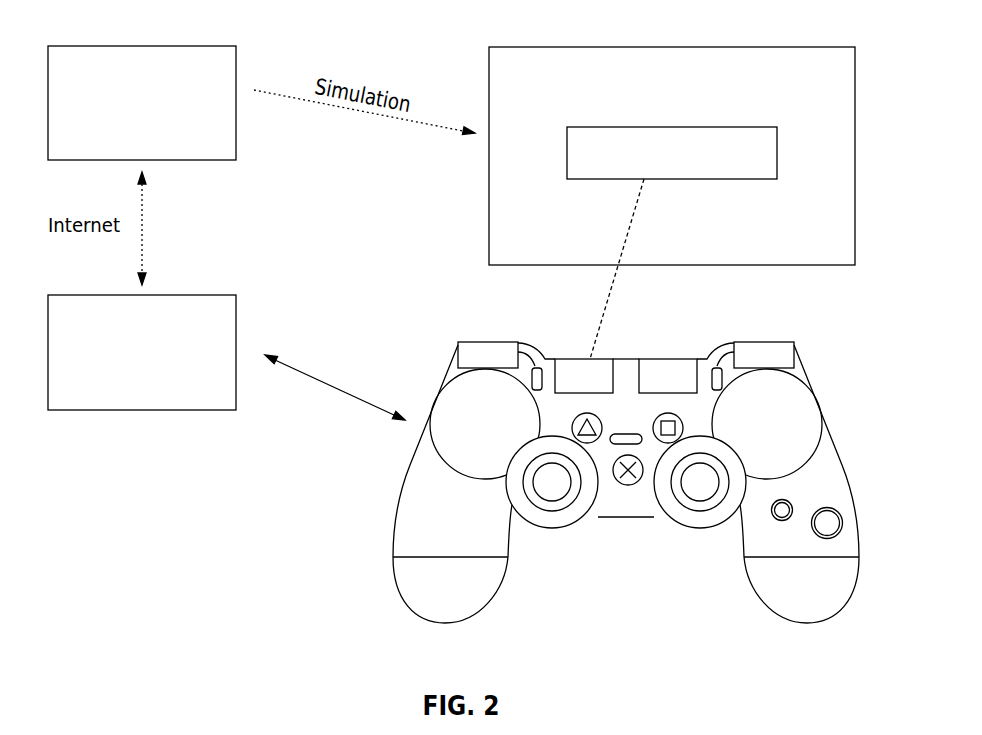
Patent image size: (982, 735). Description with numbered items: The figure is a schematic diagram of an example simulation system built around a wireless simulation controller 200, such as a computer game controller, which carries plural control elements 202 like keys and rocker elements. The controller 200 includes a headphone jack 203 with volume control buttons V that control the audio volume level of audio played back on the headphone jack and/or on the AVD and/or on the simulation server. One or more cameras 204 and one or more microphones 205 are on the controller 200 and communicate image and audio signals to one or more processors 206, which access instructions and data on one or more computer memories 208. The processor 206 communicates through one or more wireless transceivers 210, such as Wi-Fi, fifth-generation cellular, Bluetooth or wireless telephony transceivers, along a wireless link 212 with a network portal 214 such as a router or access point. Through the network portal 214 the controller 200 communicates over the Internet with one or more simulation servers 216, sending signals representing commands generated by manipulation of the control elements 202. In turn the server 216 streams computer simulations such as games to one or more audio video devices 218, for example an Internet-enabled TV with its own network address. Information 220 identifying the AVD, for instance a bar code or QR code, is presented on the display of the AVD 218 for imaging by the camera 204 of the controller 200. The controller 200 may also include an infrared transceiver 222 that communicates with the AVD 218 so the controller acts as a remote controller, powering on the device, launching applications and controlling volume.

The wireless simulation controller 200 is at (633, 458).
The control elements 202 is at (617, 484).
The headphone jack 203 is at (843, 523).
The camera 204 is at (560, 358).
The microphone 205 is at (688, 360).
The processor 206 is at (403, 593).
The computer memory 208 is at (843, 593).
The wireless transceiver 210 is at (757, 340).
The wireless link 212 is at (282, 358).
The network portal 214 is at (170, 295).
The simulation server 216 is at (170, 46).
The audio video device 218 is at (790, 47).
The information indicating identification of the AVD 220 is at (710, 127).
The infrared transceiver 222 is at (462, 343).
The volume control buttons V is at (793, 503).